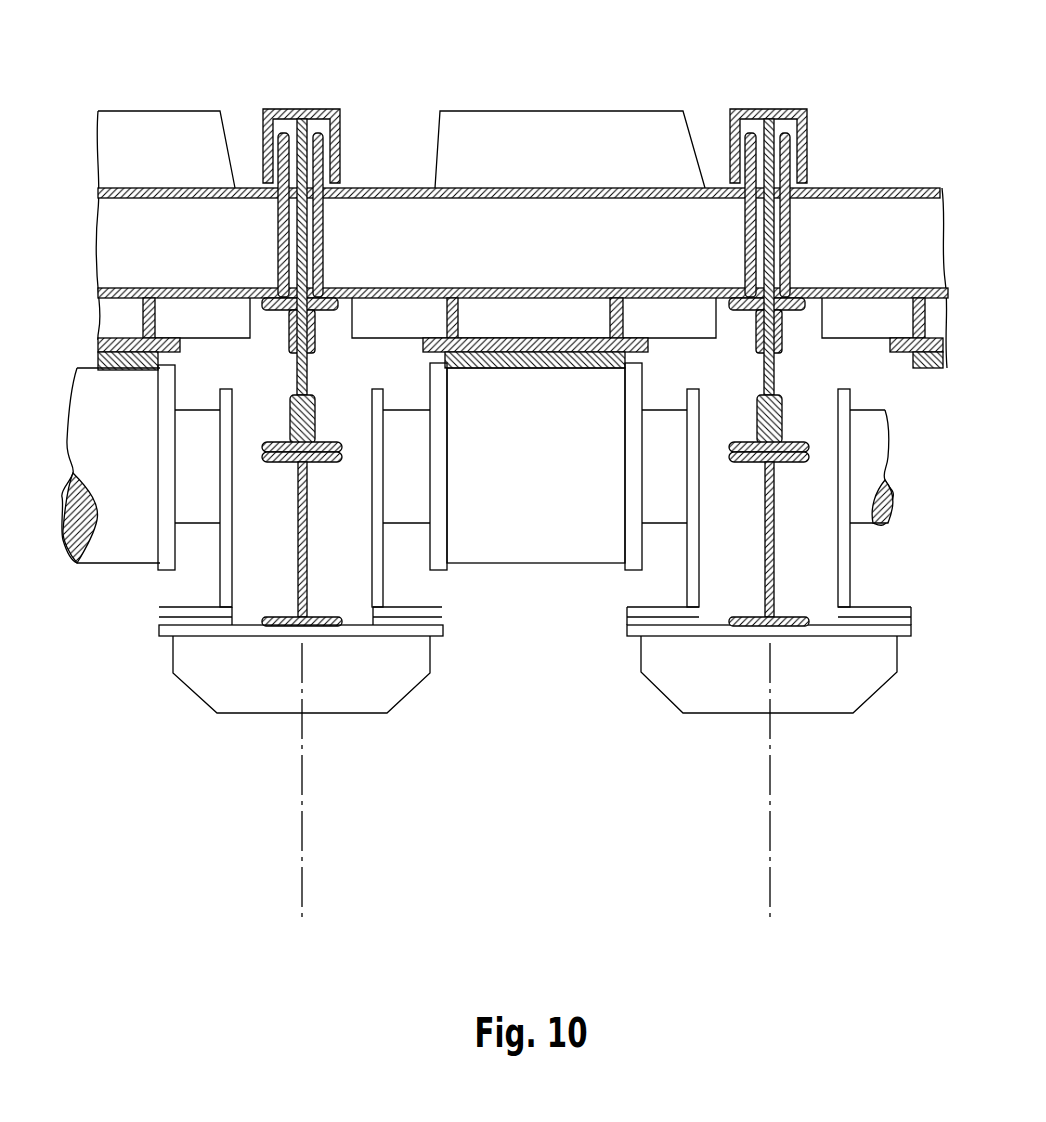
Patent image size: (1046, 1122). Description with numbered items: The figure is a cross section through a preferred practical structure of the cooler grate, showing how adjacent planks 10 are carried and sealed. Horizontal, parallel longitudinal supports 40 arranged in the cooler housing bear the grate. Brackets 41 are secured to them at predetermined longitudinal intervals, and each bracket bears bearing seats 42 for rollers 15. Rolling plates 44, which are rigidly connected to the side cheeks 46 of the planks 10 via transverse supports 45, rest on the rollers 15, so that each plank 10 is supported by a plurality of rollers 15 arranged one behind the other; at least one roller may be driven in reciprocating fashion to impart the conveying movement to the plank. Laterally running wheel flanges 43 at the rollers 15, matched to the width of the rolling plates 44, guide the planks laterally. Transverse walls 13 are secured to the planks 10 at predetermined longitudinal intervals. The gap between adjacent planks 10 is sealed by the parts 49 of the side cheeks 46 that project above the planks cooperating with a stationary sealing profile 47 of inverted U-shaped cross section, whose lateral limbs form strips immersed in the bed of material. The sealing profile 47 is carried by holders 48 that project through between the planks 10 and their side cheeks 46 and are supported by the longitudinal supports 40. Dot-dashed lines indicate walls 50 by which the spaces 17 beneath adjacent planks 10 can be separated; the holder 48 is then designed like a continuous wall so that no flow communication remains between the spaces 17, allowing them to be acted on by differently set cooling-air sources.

The plank 10 is at (436, 187).
The transverse wall 13 is at (567, 128).
The roller 15 is at (483, 548).
The space beneath the planks 17 is at (475, 843).
The longitudinal support 40 is at (772, 495).
The bracket 41 is at (385, 630).
The bearing seat 42 is at (695, 478).
The wheel flange 43 is at (632, 560).
The rolling plate 44 is at (447, 361).
The transverse support 45 is at (486, 293).
The side cheek 46 is at (786, 223).
The sealing profile 47 is at (752, 110).
The holder 48 is at (767, 141).
The projecting part of side cheek 49 is at (747, 150).
The wall 50 is at (302, 838).